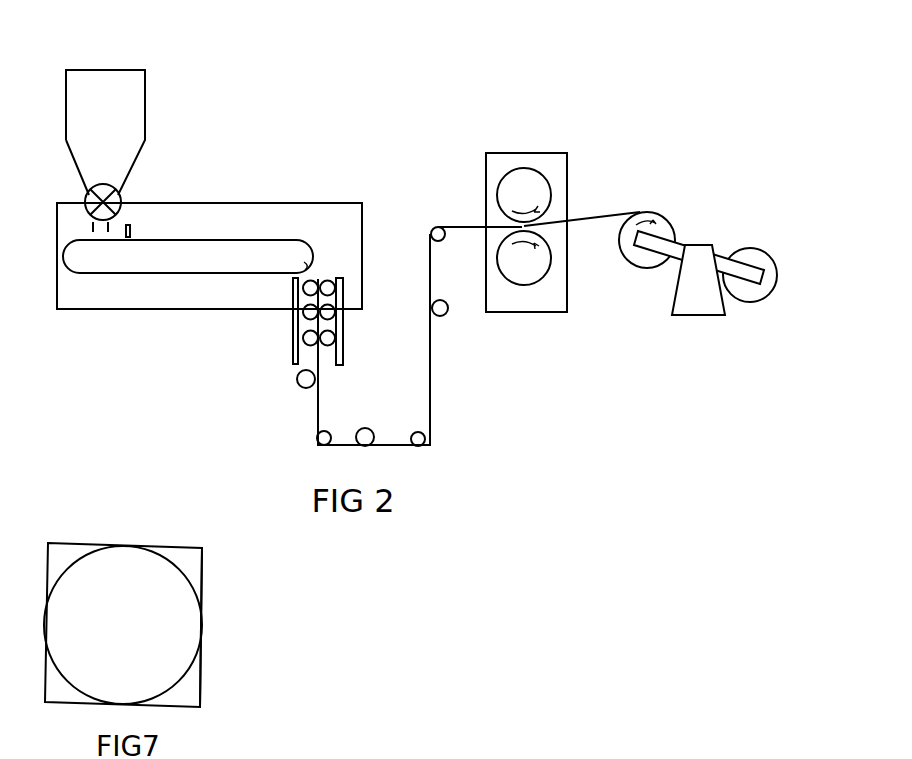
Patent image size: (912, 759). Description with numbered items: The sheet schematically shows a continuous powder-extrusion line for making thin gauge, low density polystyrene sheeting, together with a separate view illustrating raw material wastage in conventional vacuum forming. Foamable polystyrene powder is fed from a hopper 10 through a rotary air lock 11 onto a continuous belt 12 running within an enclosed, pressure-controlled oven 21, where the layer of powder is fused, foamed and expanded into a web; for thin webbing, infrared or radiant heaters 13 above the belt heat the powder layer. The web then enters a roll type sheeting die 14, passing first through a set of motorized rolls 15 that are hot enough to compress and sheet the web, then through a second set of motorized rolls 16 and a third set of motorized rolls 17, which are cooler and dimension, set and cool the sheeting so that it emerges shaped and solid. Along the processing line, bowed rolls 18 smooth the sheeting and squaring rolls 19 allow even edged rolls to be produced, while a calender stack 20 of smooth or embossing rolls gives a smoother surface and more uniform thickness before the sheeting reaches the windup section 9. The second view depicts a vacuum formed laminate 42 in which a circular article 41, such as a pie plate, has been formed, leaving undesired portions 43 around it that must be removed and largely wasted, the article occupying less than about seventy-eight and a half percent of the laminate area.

In FIG. 2, the windup section 9 is at (700, 242).
In FIG. 2, the hopper 10 is at (143, 73).
In FIG. 2, the rotary air lock 11 is at (123, 183).
In FIG. 2, the continuous belt 12 is at (113, 273).
In FIG. 2, the infrared or radiant heaters 13 is at (130, 230).
In FIG. 2, the roll type sheeting die 14 is at (343, 282).
In FIG. 2, the first set of motorized rolls 15 is at (304, 292).
In FIG. 2, the second set of motorized rolls 16 is at (305, 316).
In FIG. 2, the third set of motorized rolls 17 is at (305, 343).
In FIG. 2, the bowed rolls 18 is at (300, 388).
In FIG. 2, the squaring rolls 19 is at (328, 432).
In FIG. 2, the calender stack 20 is at (567, 193).
In FIG. 2, the oven 21 is at (177, 309).
In FIG. 7, the circular article 41 is at (187, 638).
In FIG. 7, the vacuum formed laminate 42 is at (77, 543).
In FIG. 7, the undesired portions 43 is at (200, 563).